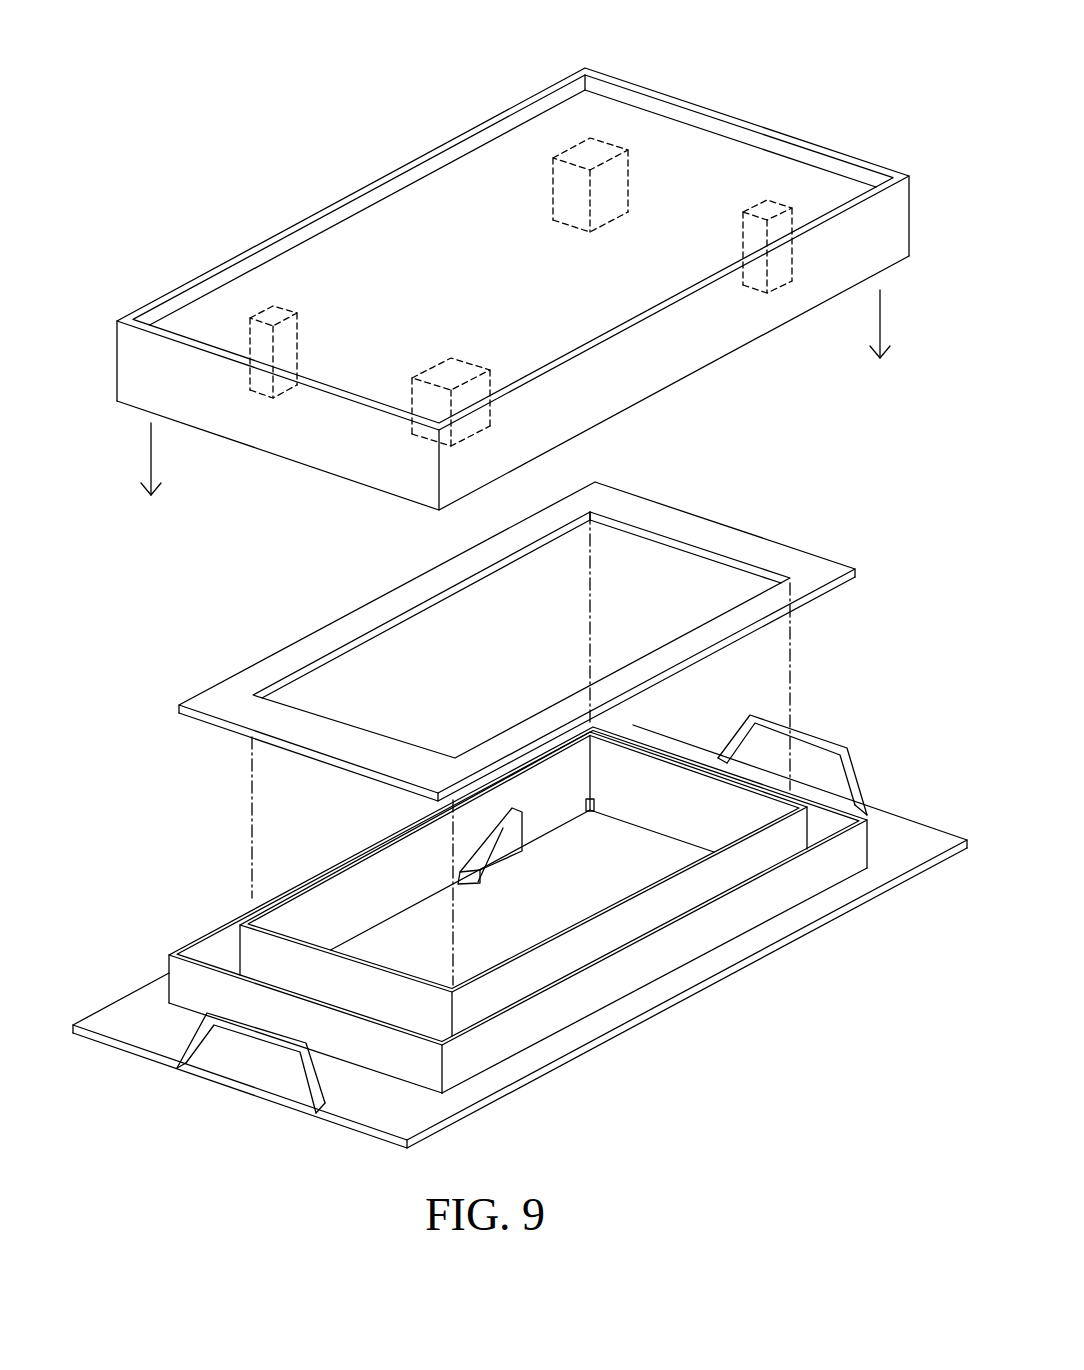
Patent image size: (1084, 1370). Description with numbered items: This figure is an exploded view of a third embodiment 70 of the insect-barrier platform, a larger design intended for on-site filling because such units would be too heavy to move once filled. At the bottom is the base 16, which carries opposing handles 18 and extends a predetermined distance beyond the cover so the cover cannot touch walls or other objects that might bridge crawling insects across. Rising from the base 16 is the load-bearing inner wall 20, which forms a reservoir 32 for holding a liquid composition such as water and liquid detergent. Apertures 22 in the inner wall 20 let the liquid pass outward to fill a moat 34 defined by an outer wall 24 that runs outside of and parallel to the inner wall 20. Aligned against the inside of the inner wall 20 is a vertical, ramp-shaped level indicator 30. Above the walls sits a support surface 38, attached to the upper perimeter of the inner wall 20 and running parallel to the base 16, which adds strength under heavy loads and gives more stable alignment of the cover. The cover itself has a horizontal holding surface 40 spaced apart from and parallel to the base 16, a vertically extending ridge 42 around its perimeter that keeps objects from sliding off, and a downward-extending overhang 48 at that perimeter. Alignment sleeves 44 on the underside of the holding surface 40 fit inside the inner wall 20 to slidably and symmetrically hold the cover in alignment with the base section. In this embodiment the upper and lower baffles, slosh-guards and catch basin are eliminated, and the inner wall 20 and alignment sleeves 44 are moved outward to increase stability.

The third embodiment 70 is at (297, 188).
The holding surface 40 is at (490, 252).
The ridge 42 is at (180, 287).
The alignment sleeves 44 is at (573, 205).
The overhang 48 is at (665, 352).
The support surface 38 is at (690, 528).
The base 16 is at (160, 1025).
The handles 18 is at (265, 1040).
The inner wall 20 is at (352, 907).
The apertures 22 is at (598, 808).
The outer wall 24 is at (760, 897).
The level indicator 30 is at (512, 843).
The reservoir 32 is at (527, 917).
The moat 34 is at (224, 952).